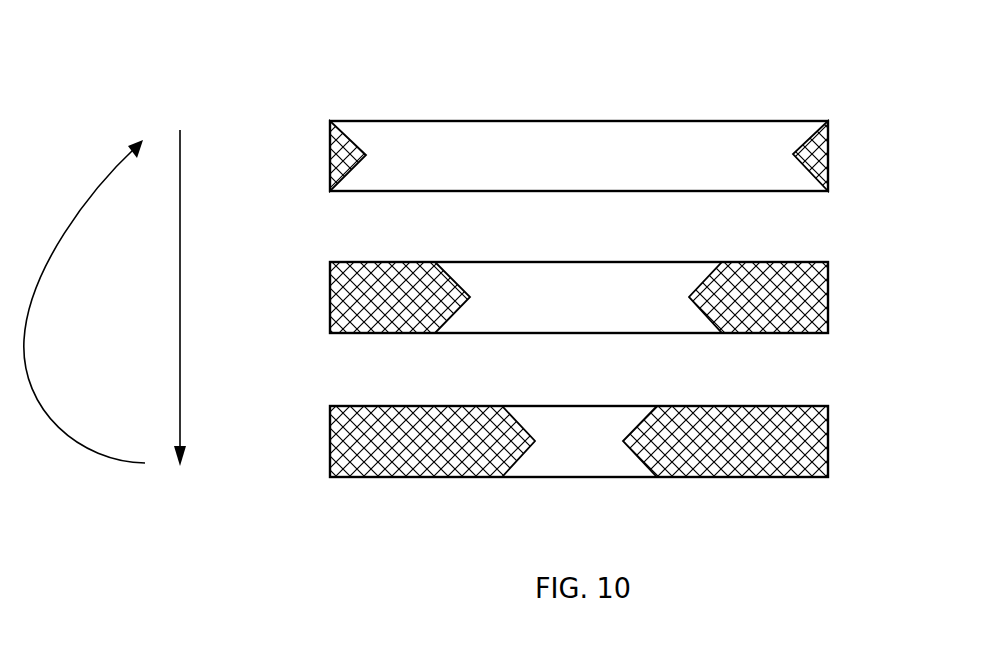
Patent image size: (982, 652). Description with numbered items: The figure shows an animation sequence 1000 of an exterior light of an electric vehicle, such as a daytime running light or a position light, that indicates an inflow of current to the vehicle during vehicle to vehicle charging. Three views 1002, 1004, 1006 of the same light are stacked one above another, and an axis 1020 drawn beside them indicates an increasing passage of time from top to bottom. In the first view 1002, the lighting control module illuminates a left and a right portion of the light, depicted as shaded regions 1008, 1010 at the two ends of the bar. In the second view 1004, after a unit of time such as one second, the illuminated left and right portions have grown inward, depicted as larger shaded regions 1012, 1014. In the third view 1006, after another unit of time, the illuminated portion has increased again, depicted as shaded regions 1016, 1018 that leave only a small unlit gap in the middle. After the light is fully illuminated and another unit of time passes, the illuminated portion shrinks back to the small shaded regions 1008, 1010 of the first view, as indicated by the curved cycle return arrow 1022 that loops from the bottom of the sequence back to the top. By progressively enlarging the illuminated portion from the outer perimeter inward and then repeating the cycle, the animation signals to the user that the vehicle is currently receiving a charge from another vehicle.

The layered adhesive structure 1000 is at (607, 44).
The view 1002 is at (588, 121).
The view 1004 is at (588, 262).
The view 1006 is at (588, 406).
The shaded region 1008 is at (340, 155).
The shaded region 1010 is at (819, 153).
The shaded region 1012 is at (340, 297).
The shaded region 1014 is at (818, 297).
The shaded region 1016 is at (340, 441).
The shaded region 1018 is at (818, 441).
The axis 1020 is at (180, 285).
The return arrow 1022 is at (87, 450).